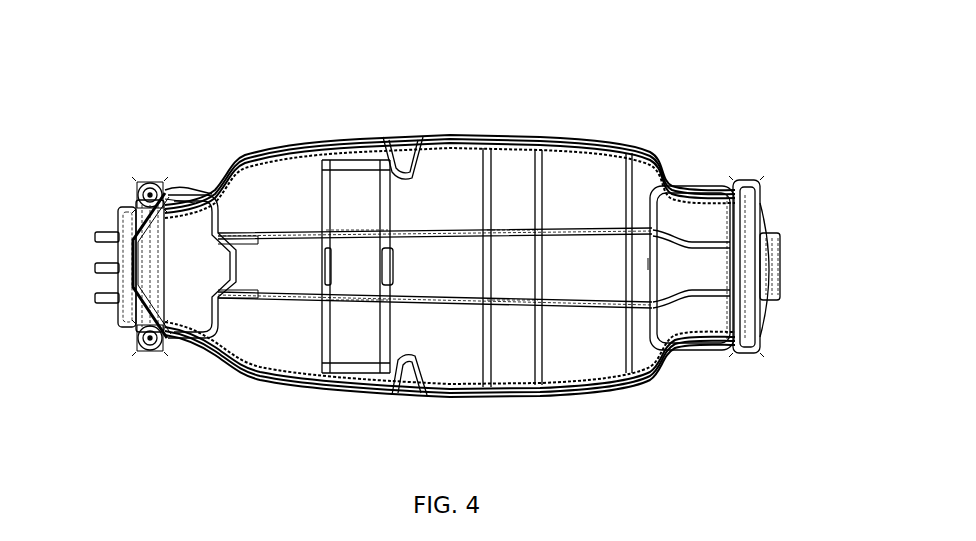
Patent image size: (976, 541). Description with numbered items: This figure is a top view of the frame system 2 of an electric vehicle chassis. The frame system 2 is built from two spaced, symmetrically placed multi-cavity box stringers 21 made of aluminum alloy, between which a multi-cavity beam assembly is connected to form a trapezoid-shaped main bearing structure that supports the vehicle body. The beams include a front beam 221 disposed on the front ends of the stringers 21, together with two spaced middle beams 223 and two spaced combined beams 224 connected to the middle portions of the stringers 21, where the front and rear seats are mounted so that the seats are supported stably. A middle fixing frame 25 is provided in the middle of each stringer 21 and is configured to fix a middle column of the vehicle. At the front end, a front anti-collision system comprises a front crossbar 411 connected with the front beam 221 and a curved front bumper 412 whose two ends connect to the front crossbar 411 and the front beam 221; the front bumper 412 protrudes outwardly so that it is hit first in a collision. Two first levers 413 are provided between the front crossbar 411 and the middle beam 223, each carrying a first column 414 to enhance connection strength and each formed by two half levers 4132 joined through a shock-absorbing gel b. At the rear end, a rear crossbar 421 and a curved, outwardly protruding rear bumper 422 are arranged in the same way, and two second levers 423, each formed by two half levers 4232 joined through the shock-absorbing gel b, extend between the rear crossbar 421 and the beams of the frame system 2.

The frame system 2 is at (450, 301).
The multi-cavity box stringer 21 is at (477, 393).
The front beam 221 is at (123, 205).
The middle beam 223 is at (382, 177).
The combined beam 224 is at (536, 158).
The middle fixing frame 25 is at (400, 143).
The front crossbar 411 is at (107, 253).
The front bumper 412 is at (98, 232).
The first lever 413 is at (183, 102).
The half lever 4132 is at (210, 198).
The first column 414 is at (243, 293).
The rear crossbar 421 is at (770, 222).
The rear bumper 422 is at (778, 267).
The second lever 423 is at (650, 75).
The half lever 4232 is at (600, 223).
The shock-absorbing gel b is at (180, 297).